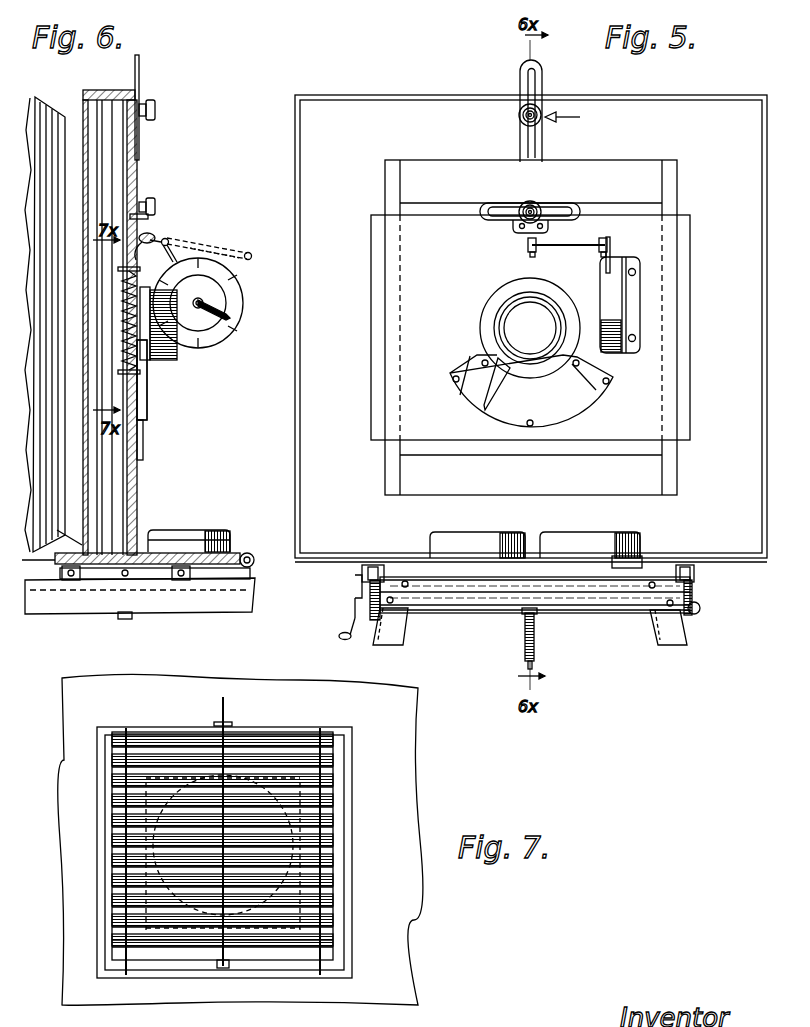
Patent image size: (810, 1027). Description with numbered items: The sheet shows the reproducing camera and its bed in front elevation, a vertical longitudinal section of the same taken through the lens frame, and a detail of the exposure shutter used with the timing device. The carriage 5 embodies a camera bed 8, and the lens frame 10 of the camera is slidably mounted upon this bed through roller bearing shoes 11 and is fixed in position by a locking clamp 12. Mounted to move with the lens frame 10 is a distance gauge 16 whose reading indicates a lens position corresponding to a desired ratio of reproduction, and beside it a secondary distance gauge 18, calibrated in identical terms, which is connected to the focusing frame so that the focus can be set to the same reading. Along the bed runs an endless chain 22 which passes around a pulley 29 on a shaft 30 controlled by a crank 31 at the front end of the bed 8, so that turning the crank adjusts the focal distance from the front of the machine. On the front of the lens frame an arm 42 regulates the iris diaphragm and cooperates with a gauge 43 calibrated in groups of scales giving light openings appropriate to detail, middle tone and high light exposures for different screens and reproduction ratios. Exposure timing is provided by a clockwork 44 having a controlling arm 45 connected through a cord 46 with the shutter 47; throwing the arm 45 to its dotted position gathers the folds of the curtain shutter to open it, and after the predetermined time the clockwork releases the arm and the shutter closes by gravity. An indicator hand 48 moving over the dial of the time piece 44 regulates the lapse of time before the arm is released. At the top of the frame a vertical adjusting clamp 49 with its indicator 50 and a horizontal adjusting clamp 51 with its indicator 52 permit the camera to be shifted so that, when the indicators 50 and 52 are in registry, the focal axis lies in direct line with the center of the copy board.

In FIG. 5, the carriage 5 is at (403, 635).
In FIG. 5, the camera bed 8 is at (362, 597).
In FIG. 6, the lens frame 10 is at (138, 472).
In FIG. 5, the lens frame 10 is at (531, 328).
In FIG. 5, the roller bearing shoes 11 is at (368, 566).
In FIG. 5, the locking clamp 12 is at (355, 580).
In FIG. 5, the gauge 16 is at (467, 534).
In FIG. 6, the secondary distance gauge 18 is at (189, 534).
In FIG. 5, the secondary distance gauge 18 is at (582, 534).
In FIG. 5, the endless chain 22 is at (534, 661).
In FIG. 5, the pulley 29 is at (536, 636).
In FIG. 5, the shaft 30 is at (486, 618).
In FIG. 5, the crank 31 is at (352, 624).
In FIG. 5, the arm 42 is at (482, 372).
In FIG. 6, the gauge 43 is at (148, 418).
In FIG. 5, the gauge 43 is at (470, 400).
In FIG. 6, the clockwork 44 is at (212, 262).
In FIG. 5, the clockwork 44 is at (600, 286).
In FIG. 6, the controlling arm 45 is at (174, 243).
In FIG. 5, the controlling arm 45 is at (611, 252).
In FIG. 6, the cord 46 is at (140, 238).
In FIG. 5, the cord 46 is at (536, 250).
In FIG. 7, the cord 46 is at (226, 706).
In FIG. 6, the shutter 47 is at (150, 352).
In FIG. 7, the shutter 47 is at (290, 775).
In FIG. 6, the indicator hand 48 is at (222, 306).
In FIG. 6, the vertical adjusting clamp 49 is at (155, 110).
In FIG. 5, the vertical adjusting clamp 49 is at (538, 108).
In FIG. 5, the indicator 50 is at (575, 120).
In FIG. 5, the horizontal adjusting clamp 51 is at (546, 209).
In FIG. 5, the indicator 52 is at (527, 190).